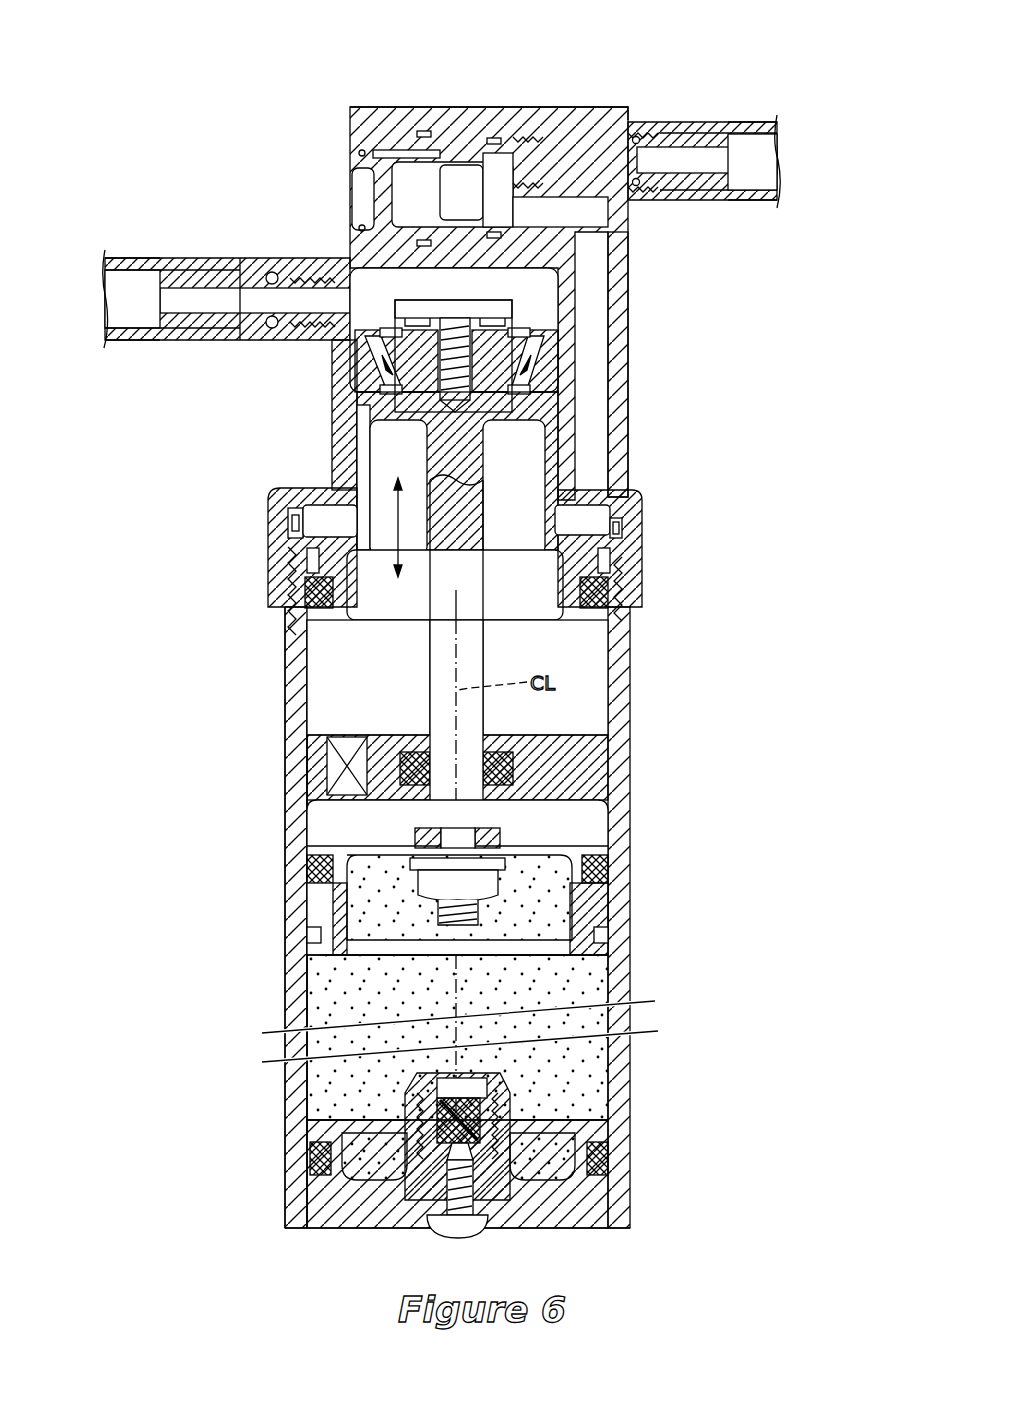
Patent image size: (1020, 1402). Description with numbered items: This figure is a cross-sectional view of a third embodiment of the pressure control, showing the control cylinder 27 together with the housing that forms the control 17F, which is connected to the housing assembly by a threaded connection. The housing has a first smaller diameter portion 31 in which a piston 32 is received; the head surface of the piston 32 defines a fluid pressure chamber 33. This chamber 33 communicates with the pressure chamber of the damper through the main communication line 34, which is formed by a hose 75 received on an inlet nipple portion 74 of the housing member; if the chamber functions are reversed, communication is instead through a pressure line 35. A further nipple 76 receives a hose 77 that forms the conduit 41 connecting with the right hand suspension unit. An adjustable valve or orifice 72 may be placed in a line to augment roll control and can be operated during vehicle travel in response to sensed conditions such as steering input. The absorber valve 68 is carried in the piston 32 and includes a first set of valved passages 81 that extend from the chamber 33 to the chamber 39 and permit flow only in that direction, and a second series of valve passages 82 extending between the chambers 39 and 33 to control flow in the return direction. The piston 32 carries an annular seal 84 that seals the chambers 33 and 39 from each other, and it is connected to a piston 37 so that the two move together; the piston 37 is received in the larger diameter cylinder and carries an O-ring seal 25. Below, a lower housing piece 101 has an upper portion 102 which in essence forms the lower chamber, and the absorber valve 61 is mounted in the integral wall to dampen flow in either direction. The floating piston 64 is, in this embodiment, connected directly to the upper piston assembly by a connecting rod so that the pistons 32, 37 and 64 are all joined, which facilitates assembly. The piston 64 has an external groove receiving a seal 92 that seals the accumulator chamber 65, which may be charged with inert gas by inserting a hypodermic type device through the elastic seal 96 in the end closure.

The control 17F is at (608, 60).
The adjustable valve or orifice 72 is at (448, 150).
The nipple 76 is at (650, 120).
The hose 77 is at (749, 120).
The main communication line 34 is at (165, 257).
The inlet nipple portion 74 is at (332, 258).
The hose 75 is at (133, 322).
The fluid pressure chamber 33 is at (454, 330).
The first smaller diameter portion 31 is at (615, 283).
The conduit 41 is at (746, 182).
The first set of valved passages 81 is at (545, 312).
The second series of valve passages 82 is at (570, 352).
The absorber valve 68 is at (737, 318).
The annular seal 84 is at (345, 362).
The piston 32 is at (585, 398).
The chamber 39 is at (355, 412).
The pressure line 35 is at (497, 422).
The piston 37 is at (622, 555).
The seal ring 25 is at (640, 592).
The absorber valve 61 is at (352, 745).
The upper portion 102 is at (284, 720).
The control cylinder 27 is at (247, 844).
The seal 92 is at (600, 862).
The floating piston 64 is at (600, 903).
The accumulator chamber 65 is at (600, 1054).
The elastic seal 96 is at (512, 1105).
The lower housing piece 101 is at (284, 1099).